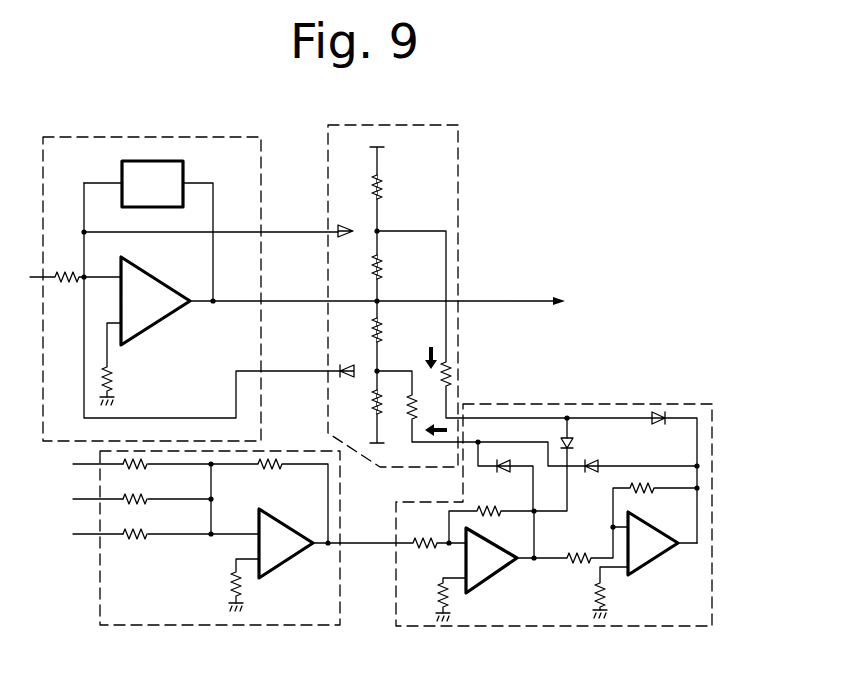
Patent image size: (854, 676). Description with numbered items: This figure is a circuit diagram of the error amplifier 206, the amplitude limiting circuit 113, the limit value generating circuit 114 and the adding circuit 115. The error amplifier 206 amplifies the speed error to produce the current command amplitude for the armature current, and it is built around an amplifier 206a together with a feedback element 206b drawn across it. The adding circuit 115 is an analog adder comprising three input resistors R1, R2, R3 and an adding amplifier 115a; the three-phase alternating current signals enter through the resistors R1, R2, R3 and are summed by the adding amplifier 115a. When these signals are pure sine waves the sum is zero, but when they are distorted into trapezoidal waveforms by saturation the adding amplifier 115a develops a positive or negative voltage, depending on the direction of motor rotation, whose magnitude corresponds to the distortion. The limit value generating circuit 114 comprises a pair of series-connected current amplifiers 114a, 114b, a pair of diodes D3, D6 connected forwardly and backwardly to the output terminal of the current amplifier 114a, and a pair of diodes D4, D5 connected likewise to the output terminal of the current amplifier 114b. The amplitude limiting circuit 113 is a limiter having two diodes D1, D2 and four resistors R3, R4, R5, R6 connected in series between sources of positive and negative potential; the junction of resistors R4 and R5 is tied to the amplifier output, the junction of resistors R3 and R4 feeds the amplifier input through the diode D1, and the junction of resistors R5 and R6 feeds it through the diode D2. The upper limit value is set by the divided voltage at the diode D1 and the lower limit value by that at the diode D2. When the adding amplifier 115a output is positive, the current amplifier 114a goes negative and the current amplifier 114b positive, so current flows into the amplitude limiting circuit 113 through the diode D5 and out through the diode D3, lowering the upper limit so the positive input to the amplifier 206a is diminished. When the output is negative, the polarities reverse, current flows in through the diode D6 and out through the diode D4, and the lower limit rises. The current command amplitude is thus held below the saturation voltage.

The error amplifier 206 is at (263, 173).
The amplifier 206a is at (153, 322).
The feedback impedance element 206b is at (167, 173).
The amplitude limiting circuit 113 is at (458, 157).
The limit value generating circuit 114 is at (602, 403).
The current amplifier 114a is at (490, 572).
The current amplifier 114b is at (650, 570).
The adding circuit 115 is at (100, 580).
The adding amplifier 115a is at (275, 560).
The input resistor R1 is at (137, 470).
The input resistor R2 is at (137, 505).
The resistor R3 is at (383, 190).
The resistor R4 is at (384, 267).
The resistor R5 is at (384, 330).
The resistor R6 is at (384, 396).
The diode D1 is at (345, 218).
The diode D2 is at (346, 380).
The diode D3 is at (575, 440).
The diode D4 is at (656, 425).
The diode D5 is at (589, 474).
The diode D6 is at (500, 475).